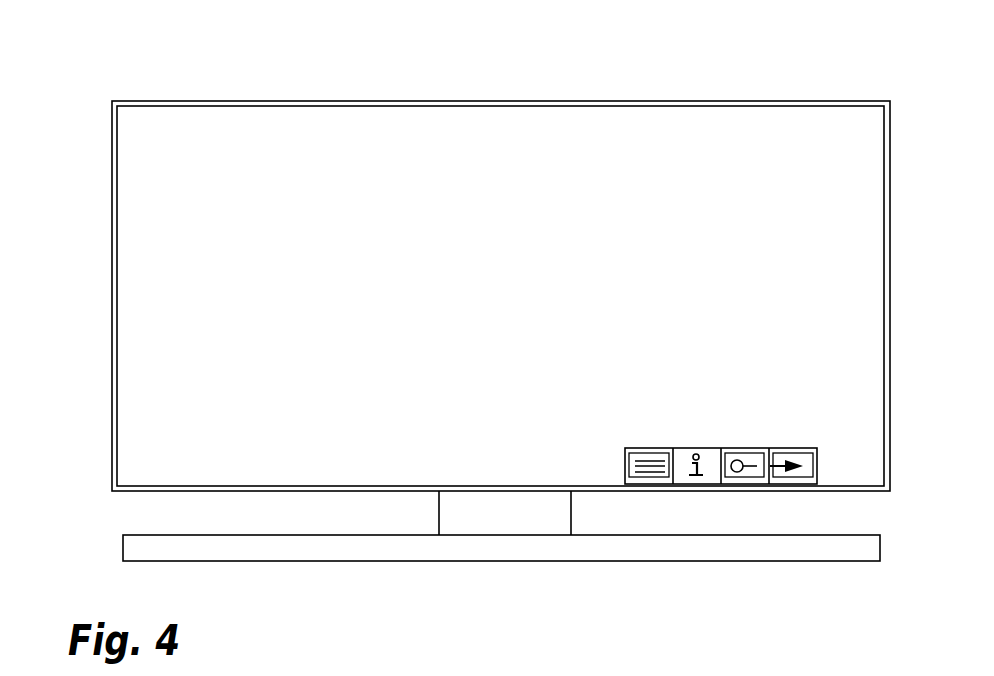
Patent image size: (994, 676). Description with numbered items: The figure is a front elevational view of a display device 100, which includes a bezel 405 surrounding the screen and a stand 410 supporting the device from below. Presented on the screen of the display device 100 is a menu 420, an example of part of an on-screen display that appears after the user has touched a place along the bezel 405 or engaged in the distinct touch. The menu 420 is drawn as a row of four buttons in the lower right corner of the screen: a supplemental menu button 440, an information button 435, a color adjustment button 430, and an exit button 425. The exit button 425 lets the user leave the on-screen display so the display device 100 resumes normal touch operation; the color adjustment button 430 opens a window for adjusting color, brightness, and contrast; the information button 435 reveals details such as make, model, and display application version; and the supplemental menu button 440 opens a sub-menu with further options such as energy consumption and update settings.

The display device 100 is at (105, 68).
The bezel 405 is at (117, 183).
The stand 410 is at (130, 520).
The menu 420 is at (823, 422).
The exit button 425 is at (815, 473).
The color adjustment button 430 is at (738, 447).
The information button 435 is at (710, 447).
The supplemental menu button 440 is at (629, 450).